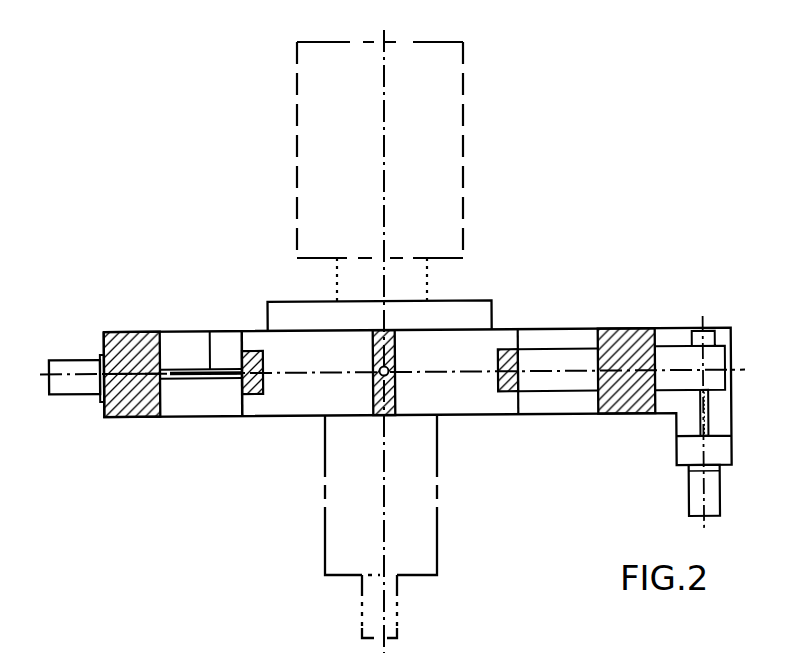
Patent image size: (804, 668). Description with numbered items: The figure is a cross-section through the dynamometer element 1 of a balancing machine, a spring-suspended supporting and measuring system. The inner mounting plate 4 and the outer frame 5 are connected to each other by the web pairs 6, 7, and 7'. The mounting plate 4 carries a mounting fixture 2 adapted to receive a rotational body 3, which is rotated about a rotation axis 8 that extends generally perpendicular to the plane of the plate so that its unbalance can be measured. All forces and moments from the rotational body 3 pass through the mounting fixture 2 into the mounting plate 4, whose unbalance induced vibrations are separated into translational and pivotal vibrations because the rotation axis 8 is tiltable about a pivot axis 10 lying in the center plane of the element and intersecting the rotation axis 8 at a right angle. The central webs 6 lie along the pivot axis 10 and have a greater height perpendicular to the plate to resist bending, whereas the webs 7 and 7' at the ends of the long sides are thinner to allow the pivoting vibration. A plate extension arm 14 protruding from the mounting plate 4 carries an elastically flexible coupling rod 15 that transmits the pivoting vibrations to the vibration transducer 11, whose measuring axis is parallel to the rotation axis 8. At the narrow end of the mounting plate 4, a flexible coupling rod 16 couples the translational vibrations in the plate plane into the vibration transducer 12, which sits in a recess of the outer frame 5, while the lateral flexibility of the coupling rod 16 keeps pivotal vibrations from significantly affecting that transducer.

The dynamometer element 1 is at (125, 418).
The mounting fixture 2 is at (448, 312).
The rotational body 3 is at (340, 66).
The mounting plate 4 is at (310, 395).
The outer frame 5 is at (133, 343).
The web pair 6 is at (389, 400).
The web pair 7 is at (247, 408).
The web pair 7' is at (541, 407).
The rotation axis 8 is at (386, 58).
The pivot axis 10 is at (389, 368).
The vibration transducer 11 is at (690, 505).
The vibration transducer 12 is at (66, 366).
The plate extension arm 14 is at (676, 345).
The coupling rod 15 is at (700, 418).
The coupling rod 16 is at (210, 331).